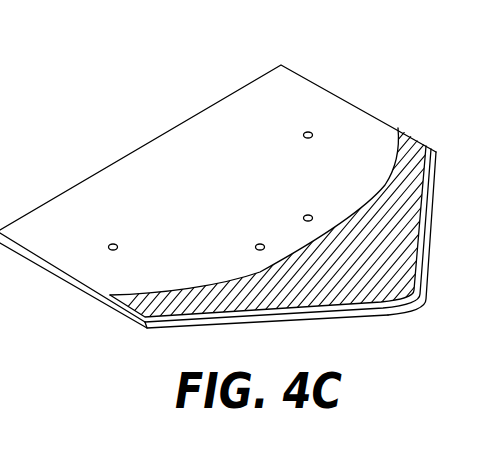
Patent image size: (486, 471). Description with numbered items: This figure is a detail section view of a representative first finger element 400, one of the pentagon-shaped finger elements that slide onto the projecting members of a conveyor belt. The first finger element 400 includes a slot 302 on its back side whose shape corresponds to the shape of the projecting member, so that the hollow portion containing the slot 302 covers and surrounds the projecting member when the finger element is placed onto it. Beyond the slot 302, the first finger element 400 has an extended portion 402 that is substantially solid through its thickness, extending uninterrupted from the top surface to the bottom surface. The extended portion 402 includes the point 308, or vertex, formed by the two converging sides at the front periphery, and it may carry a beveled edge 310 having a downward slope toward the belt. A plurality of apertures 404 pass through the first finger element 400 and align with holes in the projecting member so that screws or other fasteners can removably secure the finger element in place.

The first finger element 400 is at (308, 78).
The slot 302 is at (194, 157).
The extended portion 402 is at (403, 222).
The plurality of apertures 404 is at (304, 135).
The beveled edge 310 is at (220, 318).
The point 308 is at (400, 313).